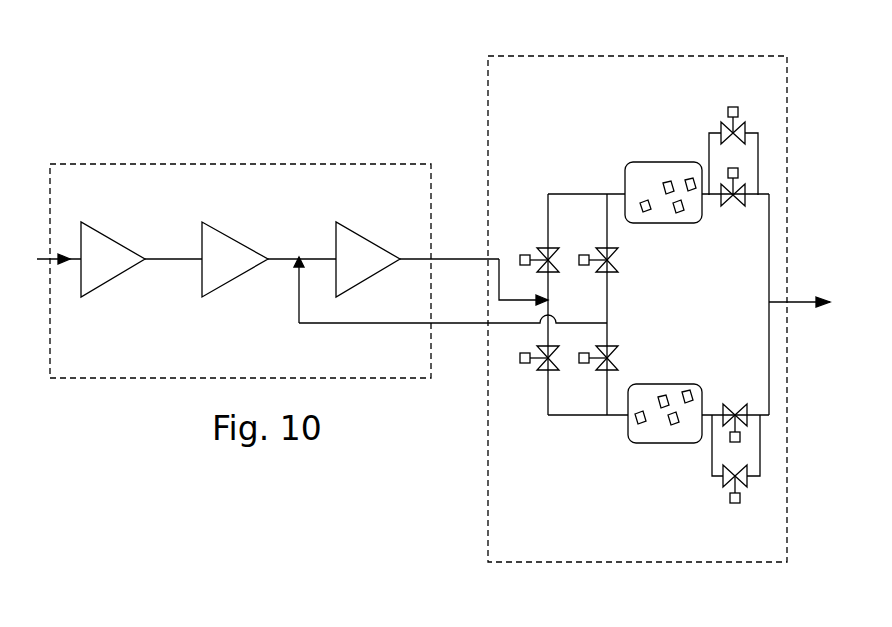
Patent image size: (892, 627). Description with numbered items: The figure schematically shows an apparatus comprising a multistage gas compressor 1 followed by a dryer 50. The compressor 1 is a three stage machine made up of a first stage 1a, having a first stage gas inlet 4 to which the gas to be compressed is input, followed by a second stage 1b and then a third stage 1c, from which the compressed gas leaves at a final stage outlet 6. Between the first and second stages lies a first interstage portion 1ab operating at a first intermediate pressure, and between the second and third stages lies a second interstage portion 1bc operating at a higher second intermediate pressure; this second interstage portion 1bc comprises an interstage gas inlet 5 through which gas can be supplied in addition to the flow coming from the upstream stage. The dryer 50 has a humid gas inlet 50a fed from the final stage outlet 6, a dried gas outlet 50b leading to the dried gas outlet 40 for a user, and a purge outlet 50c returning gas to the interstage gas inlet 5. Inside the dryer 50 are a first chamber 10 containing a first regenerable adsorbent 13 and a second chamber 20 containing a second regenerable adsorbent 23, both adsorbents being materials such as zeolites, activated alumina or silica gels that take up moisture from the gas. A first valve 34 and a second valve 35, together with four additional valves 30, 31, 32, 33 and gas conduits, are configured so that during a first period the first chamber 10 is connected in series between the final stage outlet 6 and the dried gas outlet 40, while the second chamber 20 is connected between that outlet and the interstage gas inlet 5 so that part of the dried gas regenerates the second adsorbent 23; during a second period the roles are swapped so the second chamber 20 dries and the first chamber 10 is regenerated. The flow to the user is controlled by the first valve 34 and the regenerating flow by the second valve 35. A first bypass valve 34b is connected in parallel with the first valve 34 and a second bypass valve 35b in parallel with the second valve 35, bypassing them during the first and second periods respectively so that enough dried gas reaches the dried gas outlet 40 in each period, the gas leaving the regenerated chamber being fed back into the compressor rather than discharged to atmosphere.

The multistage gas compressor 1 is at (163, 164).
The first stage 1a is at (113, 259).
The second stage 1b is at (235, 259).
The third stage 1c is at (368, 259).
The first interstage portion 1ab is at (174, 248).
The second interstage portion 1bc is at (286, 244).
The first stage gas inlet 4 is at (43, 257).
The interstage gas inlet 5 is at (302, 258).
The final stage outlet 6 is at (423, 258).
The first chamber 10 is at (657, 162).
The first regenerable adsorbent 13 is at (683, 210).
The second chamber 20 is at (655, 443).
The second regenerable adsorbent 23 is at (688, 393).
The additional valve 30 is at (542, 248).
The additional valve 31 is at (545, 372).
The additional valve 32 is at (618, 263).
The additional valve 33 is at (618, 358).
The first valve 34 is at (732, 207).
The first bypass valve 34b is at (726, 120).
The second valve 35 is at (737, 403).
The second bypass valve 35b is at (729, 504).
The dried gas outlet 40 is at (825, 308).
The dryer 50 is at (535, 56).
The humid gas inlet 50a is at (492, 258).
The dried gas outlet 50b is at (790, 302).
The purge outlet 50c is at (486, 325).